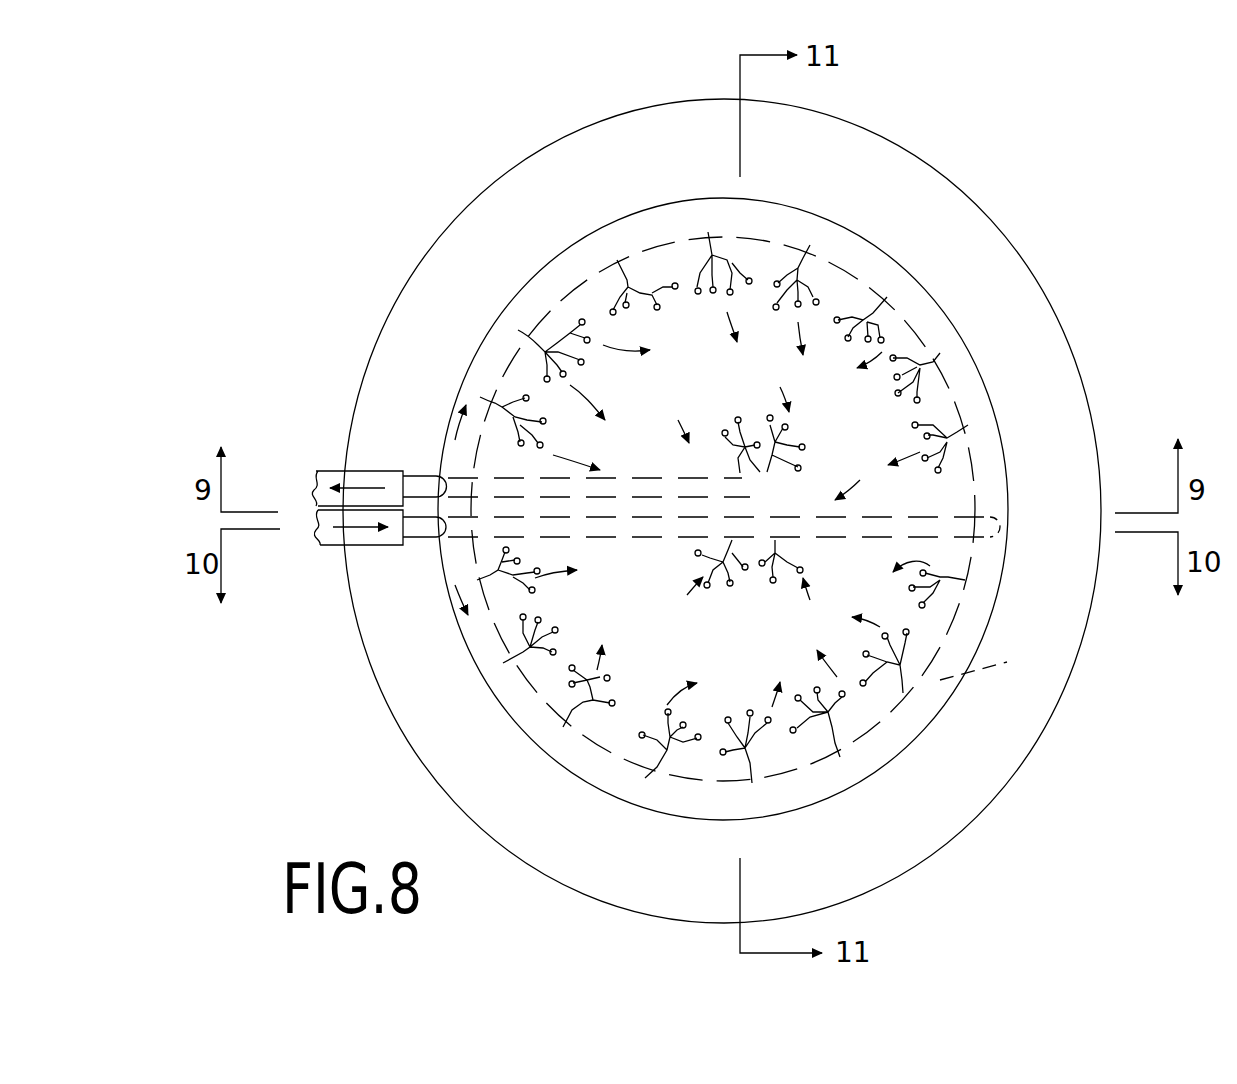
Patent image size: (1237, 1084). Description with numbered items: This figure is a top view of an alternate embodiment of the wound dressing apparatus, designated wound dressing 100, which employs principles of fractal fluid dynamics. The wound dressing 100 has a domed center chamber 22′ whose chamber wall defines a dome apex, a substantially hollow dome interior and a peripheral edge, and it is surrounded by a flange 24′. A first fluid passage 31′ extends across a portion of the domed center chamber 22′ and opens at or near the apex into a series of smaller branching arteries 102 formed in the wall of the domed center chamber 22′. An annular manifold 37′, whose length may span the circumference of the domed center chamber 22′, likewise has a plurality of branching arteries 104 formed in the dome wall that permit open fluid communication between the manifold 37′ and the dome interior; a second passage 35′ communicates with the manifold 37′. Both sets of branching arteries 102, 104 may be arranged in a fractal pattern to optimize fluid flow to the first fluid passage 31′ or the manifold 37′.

The wound dressing 100 is at (1025, 180).
The flange 24′ is at (1027, 323).
The domed center chamber 22′ is at (521, 375).
The first fluid passage 31′ is at (618, 470).
The second passage 35′ is at (670, 530).
The manifold 37′ is at (1050, 676).
The branching arteries 102 is at (800, 438).
The branching arteries 104 is at (758, 718).